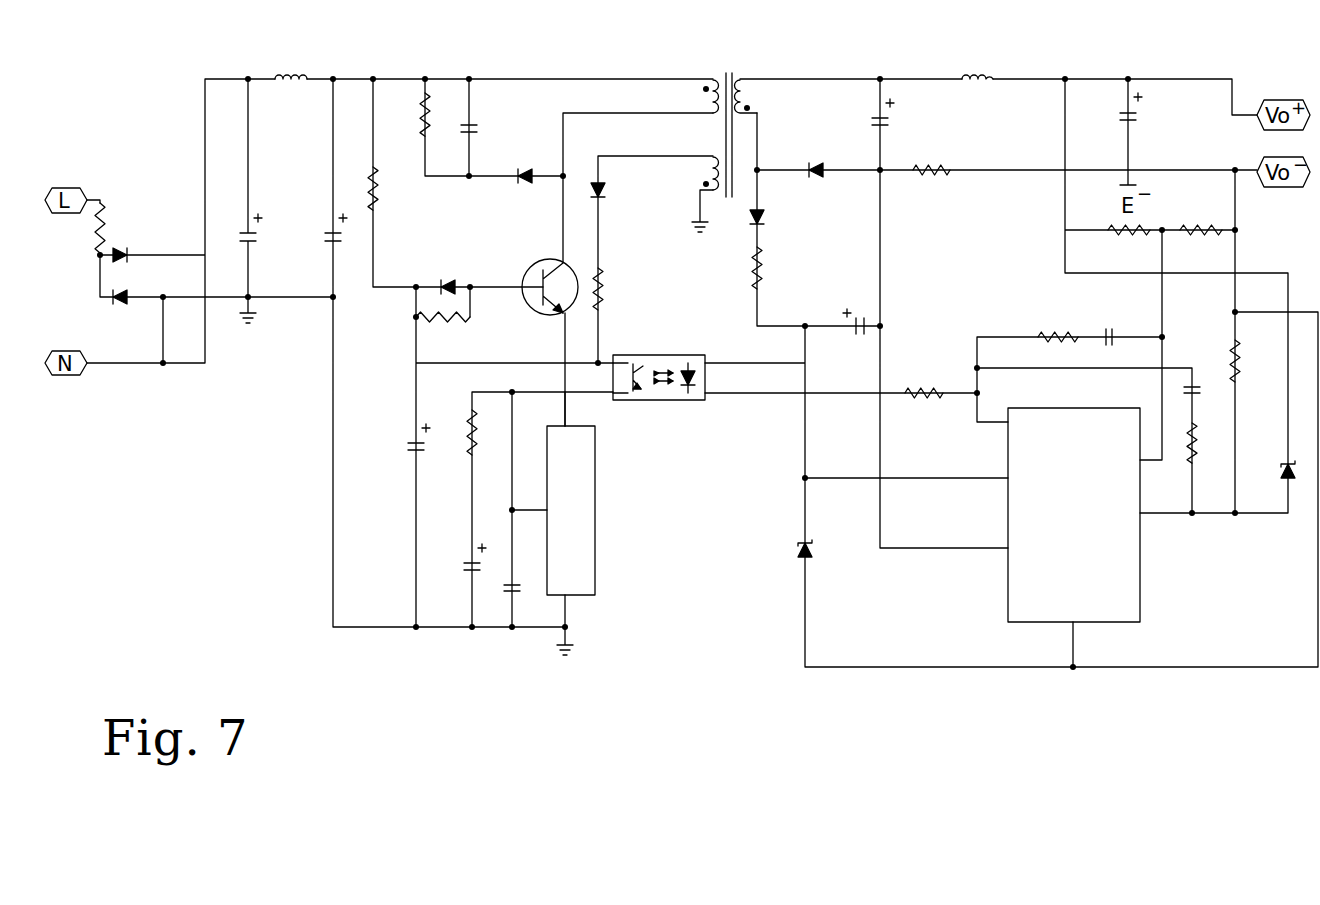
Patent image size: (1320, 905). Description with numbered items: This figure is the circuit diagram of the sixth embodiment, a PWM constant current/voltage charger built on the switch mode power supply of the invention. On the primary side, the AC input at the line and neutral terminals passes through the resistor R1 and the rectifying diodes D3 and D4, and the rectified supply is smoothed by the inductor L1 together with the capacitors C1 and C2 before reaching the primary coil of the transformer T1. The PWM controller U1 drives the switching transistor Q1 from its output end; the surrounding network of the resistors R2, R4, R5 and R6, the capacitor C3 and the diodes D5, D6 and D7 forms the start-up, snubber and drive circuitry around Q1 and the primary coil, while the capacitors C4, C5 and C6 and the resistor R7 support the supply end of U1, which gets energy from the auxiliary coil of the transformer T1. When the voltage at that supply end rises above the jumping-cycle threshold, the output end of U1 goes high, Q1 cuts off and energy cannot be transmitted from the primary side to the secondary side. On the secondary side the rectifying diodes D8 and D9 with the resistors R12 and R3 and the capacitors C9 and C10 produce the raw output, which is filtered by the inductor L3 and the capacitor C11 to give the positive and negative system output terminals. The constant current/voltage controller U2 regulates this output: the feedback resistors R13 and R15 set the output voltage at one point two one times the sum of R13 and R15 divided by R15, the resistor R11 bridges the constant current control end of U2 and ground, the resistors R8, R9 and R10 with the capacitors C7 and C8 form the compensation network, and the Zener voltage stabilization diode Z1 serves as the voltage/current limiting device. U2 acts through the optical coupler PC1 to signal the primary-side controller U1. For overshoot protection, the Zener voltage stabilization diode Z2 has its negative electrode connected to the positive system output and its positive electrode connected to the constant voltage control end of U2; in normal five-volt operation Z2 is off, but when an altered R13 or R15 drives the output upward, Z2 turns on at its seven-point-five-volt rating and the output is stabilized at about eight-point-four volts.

The resistor R1 is at (106, 214).
The diode D3 is at (146, 247).
The diode D4 is at (119, 315).
The inductor L1 is at (291, 94).
The capacitor C1 is at (266, 188).
The capacitor C2 is at (323, 234).
The resistor R2 is at (389, 188).
The resistor R4 is at (410, 114).
The capacitor C3 is at (482, 115).
The diode D5 is at (532, 163).
The diode D7 is at (615, 193).
The resistor R5 is at (614, 289).
The switching transistor Q1 is at (543, 297).
The diode D6 is at (447, 274).
The resistor R6 is at (425, 320).
The capacitor C4 is at (405, 421).
The resistor R7 is at (457, 424).
The capacitor C5 is at (458, 603).
The capacitor C6 is at (511, 624).
The PWM controller U1 is at (575, 508).
The optical coupler PC1 is at (659, 394).
The transformer T1 is at (727, 144).
The diode D8 is at (775, 218).
The resistor R12 is at (779, 268).
The diode D9 is at (816, 158).
The capacitor C10 is at (850, 306).
The capacitor C9 is at (898, 118).
The resistor R3 is at (931, 188).
The resistor R8 is at (924, 381).
The inductor L3 is at (977, 94).
The capacitor C11 is at (1154, 112).
The feedback resistor R13 is at (1083, 233).
The feedback resistor R15 is at (1234, 233).
The resistor R9 is at (1058, 325).
The capacitor C8 is at (1109, 323).
The capacitor C7 is at (1191, 367).
The resistor R10 is at (1200, 485).
The resistor R11 is at (1257, 361).
The Zener voltage stabilization diode Z2 is at (1272, 470).
The Zener voltage stabilization diode Z1 is at (790, 548).
The constant current/voltage controller U2 is at (1064, 525).